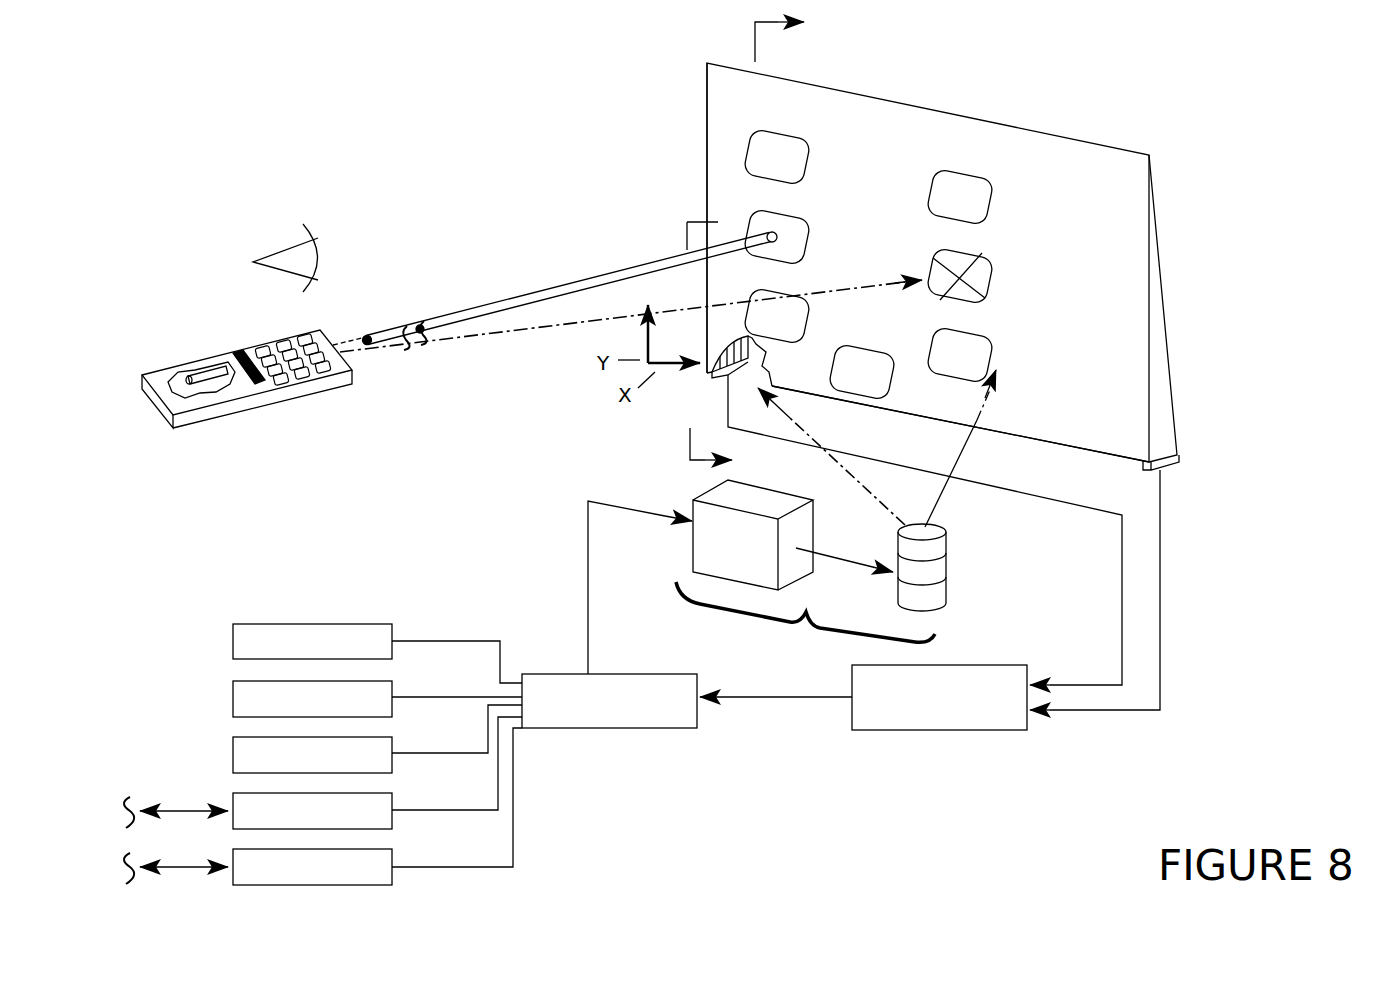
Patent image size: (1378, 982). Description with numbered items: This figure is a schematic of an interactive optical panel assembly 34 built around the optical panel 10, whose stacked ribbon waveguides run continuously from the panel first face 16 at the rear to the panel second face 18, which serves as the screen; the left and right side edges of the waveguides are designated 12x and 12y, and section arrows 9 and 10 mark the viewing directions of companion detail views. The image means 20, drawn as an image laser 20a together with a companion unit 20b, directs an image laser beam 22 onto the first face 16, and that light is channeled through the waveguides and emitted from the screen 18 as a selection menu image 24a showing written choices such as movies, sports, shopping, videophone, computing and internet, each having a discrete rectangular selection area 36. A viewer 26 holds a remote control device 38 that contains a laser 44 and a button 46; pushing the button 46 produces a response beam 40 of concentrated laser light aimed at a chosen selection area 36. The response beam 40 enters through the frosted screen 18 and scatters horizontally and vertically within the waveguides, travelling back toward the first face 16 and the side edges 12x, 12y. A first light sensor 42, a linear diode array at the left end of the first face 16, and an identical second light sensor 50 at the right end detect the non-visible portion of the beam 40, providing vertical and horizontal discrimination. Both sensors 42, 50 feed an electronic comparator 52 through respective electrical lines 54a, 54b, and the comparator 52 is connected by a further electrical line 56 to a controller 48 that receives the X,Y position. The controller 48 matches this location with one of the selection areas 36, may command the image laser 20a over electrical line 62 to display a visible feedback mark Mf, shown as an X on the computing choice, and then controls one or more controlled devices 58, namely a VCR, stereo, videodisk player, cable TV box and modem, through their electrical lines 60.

The section line 9 is at (757, 242).
The optical panel 10 is at (703, 133).
The left side edge of waveguide 12x is at (708, 297).
The right side edge of waveguide 12y is at (1158, 425).
The panel first face 16 is at (947, 422).
The panel second face 18 is at (730, 205).
The image means 20 is at (805, 613).
The image laser 20a is at (937, 573).
The processor 20b is at (753, 535).
The image laser beam 22 is at (945, 497).
The selection menu image 24a is at (1020, 164).
The viewer 26 is at (286, 252).
The interactive optical panel assembly 34 is at (570, 474).
The selection area 36 is at (770, 135).
The remote control device 38 is at (148, 362).
The response beam 40 is at (510, 302).
The first light sensor 42 is at (700, 372).
The laser 44 is at (200, 382).
The button 46 is at (248, 360).
The controller 48 is at (645, 674).
The second light sensor 50 is at (1165, 463).
The comparator 52 is at (978, 665).
The electrical line 54a is at (1122, 608).
The electrical line 54b is at (1164, 544).
The electrical line 56 is at (767, 697).
The controlled devices 58 is at (245, 698).
The electrical lines 60 is at (425, 640).
The electrical line 62 is at (588, 560).
The visible feedback mark Mf is at (972, 262).